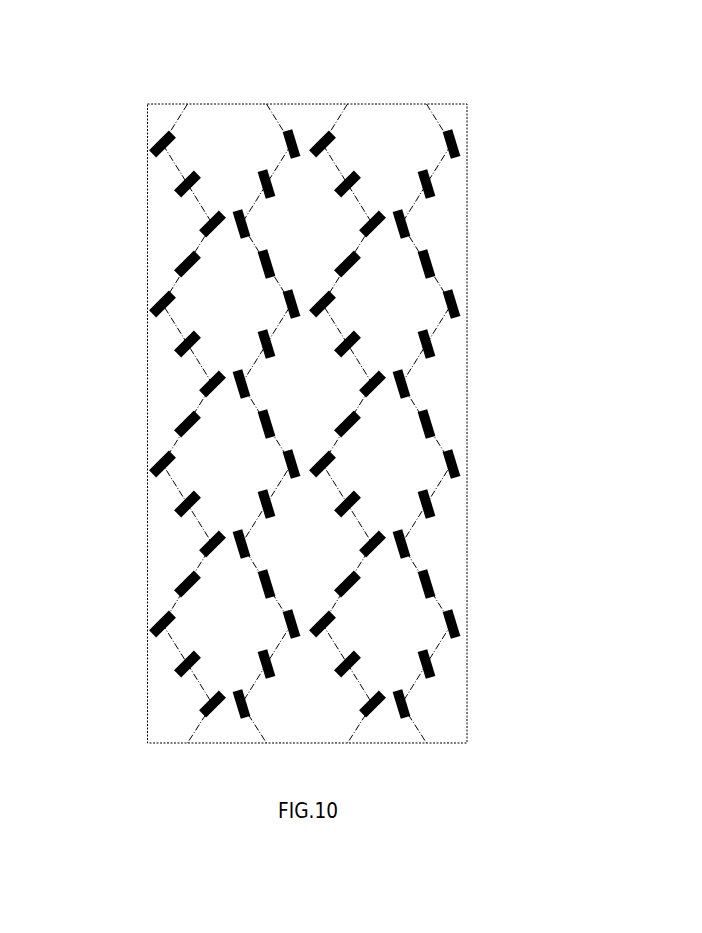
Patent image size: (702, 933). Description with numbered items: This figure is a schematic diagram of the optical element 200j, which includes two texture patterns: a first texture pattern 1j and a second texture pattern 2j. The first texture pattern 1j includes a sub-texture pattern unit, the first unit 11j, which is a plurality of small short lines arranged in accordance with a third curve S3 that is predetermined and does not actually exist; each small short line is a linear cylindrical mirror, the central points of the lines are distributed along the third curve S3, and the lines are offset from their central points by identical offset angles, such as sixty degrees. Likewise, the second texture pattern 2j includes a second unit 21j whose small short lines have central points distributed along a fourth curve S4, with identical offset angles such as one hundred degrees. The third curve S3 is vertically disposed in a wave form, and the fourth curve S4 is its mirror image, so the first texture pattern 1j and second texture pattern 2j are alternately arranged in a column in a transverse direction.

The optical element 200j is at (266, 43).
The first texture pattern 1j is at (173, 250).
The second texture pattern 2j is at (428, 250).
The first unit 11j is at (151, 305).
The second unit 21j is at (461, 304).
The third curve S3 is at (170, 126).
The fourth curve S4 is at (430, 124).